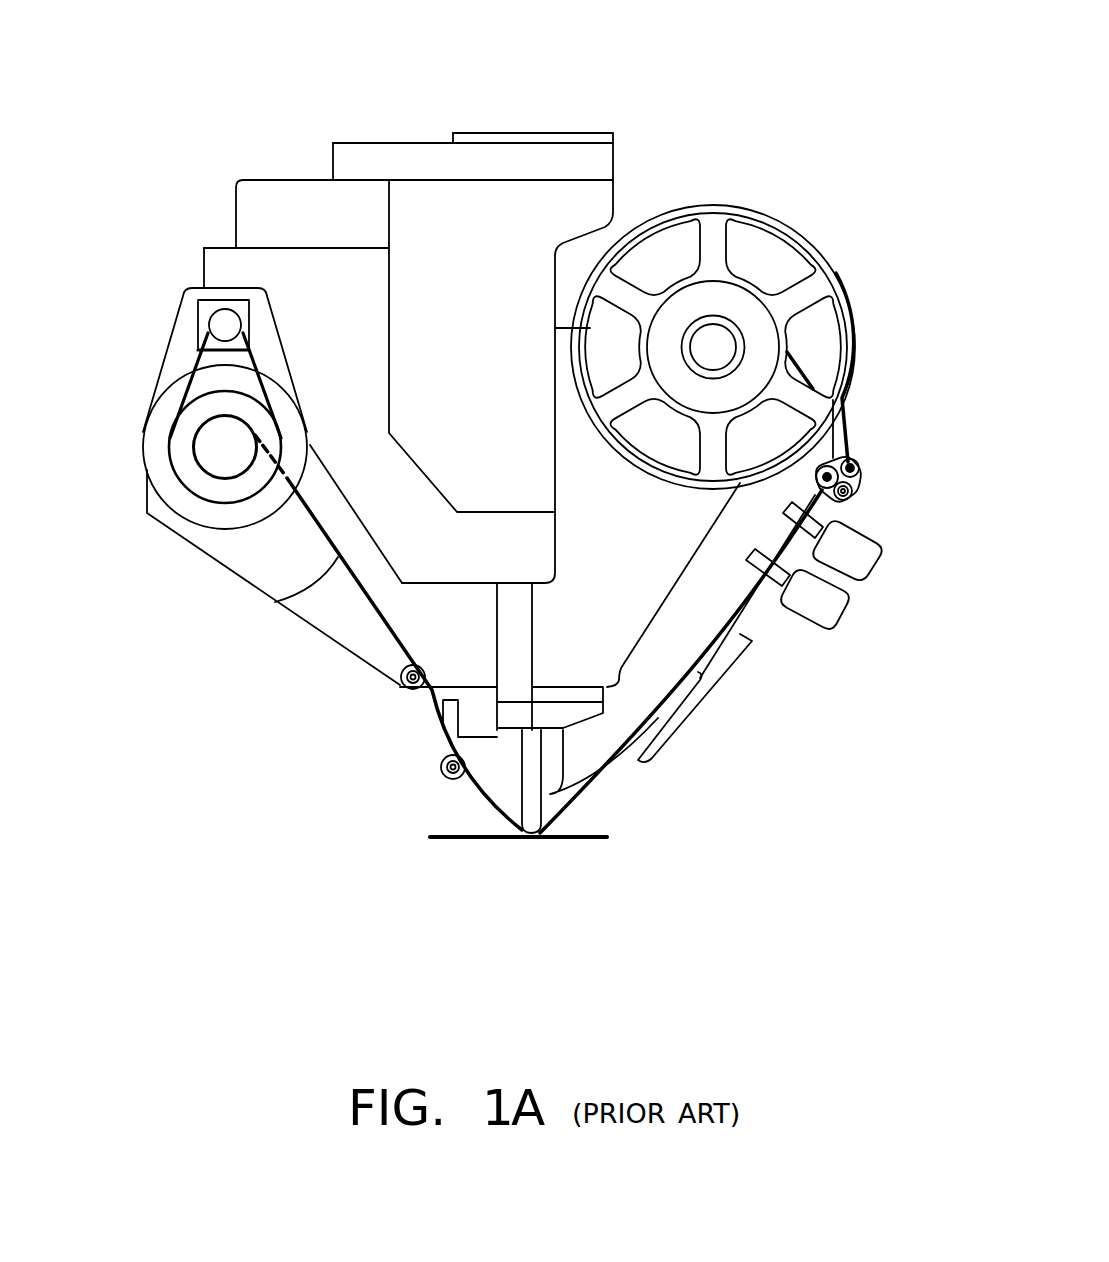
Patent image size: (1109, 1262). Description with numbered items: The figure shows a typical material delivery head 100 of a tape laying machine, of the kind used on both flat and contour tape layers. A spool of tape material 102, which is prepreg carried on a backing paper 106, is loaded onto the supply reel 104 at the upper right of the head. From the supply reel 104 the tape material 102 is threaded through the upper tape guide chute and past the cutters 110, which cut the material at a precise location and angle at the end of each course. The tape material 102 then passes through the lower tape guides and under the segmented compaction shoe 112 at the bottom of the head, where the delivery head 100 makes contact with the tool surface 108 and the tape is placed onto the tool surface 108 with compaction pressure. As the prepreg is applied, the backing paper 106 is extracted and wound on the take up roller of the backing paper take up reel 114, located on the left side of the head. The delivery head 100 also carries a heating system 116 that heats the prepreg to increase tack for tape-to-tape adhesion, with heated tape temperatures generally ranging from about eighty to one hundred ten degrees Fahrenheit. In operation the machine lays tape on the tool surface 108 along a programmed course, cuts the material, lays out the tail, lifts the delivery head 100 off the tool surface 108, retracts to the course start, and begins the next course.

The material delivery head 100 is at (558, 60).
The tape material 102 is at (851, 445).
The supply reel 104 is at (708, 228).
The backing paper 106 is at (277, 602).
The tool surface 108 is at (583, 837).
The cutters 110 is at (827, 607).
The segmented compaction shoe 112 is at (518, 812).
The backing paper take up reel 114 is at (140, 442).
The heating system 116 is at (697, 718).